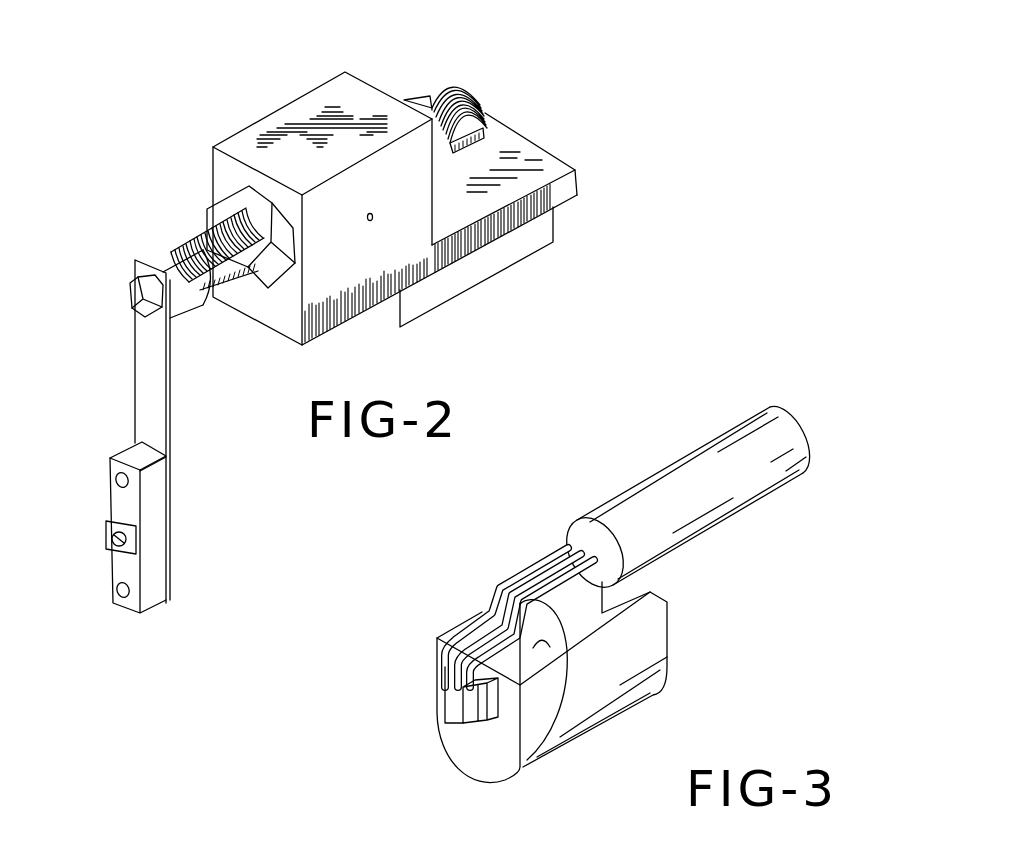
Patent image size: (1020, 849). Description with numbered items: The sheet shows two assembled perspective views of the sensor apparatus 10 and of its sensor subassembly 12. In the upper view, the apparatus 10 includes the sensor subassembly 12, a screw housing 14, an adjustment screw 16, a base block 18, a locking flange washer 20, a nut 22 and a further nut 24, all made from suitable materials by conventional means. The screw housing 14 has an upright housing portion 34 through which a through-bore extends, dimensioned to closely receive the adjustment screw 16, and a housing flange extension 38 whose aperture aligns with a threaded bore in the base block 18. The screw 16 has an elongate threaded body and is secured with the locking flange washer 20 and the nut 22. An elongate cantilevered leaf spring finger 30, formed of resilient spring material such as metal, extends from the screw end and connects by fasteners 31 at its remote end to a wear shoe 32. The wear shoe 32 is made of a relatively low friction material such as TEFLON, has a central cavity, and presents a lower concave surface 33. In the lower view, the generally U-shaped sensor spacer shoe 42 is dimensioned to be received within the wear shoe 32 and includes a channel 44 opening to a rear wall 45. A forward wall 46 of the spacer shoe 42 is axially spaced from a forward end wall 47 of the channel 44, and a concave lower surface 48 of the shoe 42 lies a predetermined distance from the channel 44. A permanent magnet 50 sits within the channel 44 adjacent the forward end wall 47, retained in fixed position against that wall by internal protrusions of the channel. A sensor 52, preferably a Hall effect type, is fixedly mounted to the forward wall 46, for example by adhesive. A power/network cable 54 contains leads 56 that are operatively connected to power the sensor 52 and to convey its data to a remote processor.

In FIG. 2, the sensor apparatus 10 is at (141, 103).
In FIG. 2, the sensor subassembly 12 is at (160, 623).
In FIG. 2, the screw housing 14 is at (283, 107).
In FIG. 2, the adjustment screw 16 is at (432, 102).
In FIG. 2, the base block 18 is at (480, 284).
In FIG. 2, the locking flange washer 20 is at (186, 305).
In FIG. 2, the nut 22 is at (230, 196).
In FIG. 2, the nut 24 is at (440, 170).
In FIG. 2, the cantilevered leaf spring finger 30 is at (150, 385).
In FIG. 2, the fasteners 31 is at (118, 490).
In FIG. 2, the wear shoe 32 is at (150, 540).
In FIG. 2, the lower concave surface 33 is at (118, 563).
In FIG. 2, the upright housing portion 34 is at (337, 277).
In FIG. 2, the housing flange extension 38 is at (567, 185).
In FIG. 3, the sensor spacer shoe 42 is at (595, 742).
In FIG. 3, the channel 44 is at (610, 598).
In FIG. 3, the rear wall 45 is at (655, 643).
In FIG. 3, the forward wall 46 is at (472, 752).
In FIG. 3, the forward end wall 47 is at (529, 770).
In FIG. 3, the concave lower surface 48 is at (620, 714).
In FIG. 3, the permanent magnet 50 is at (552, 628).
In FIG. 3, the sensor 52 is at (453, 702).
In FIG. 3, the power/network cable 54 is at (670, 480).
In FIG. 3, the leads 56 is at (573, 577).